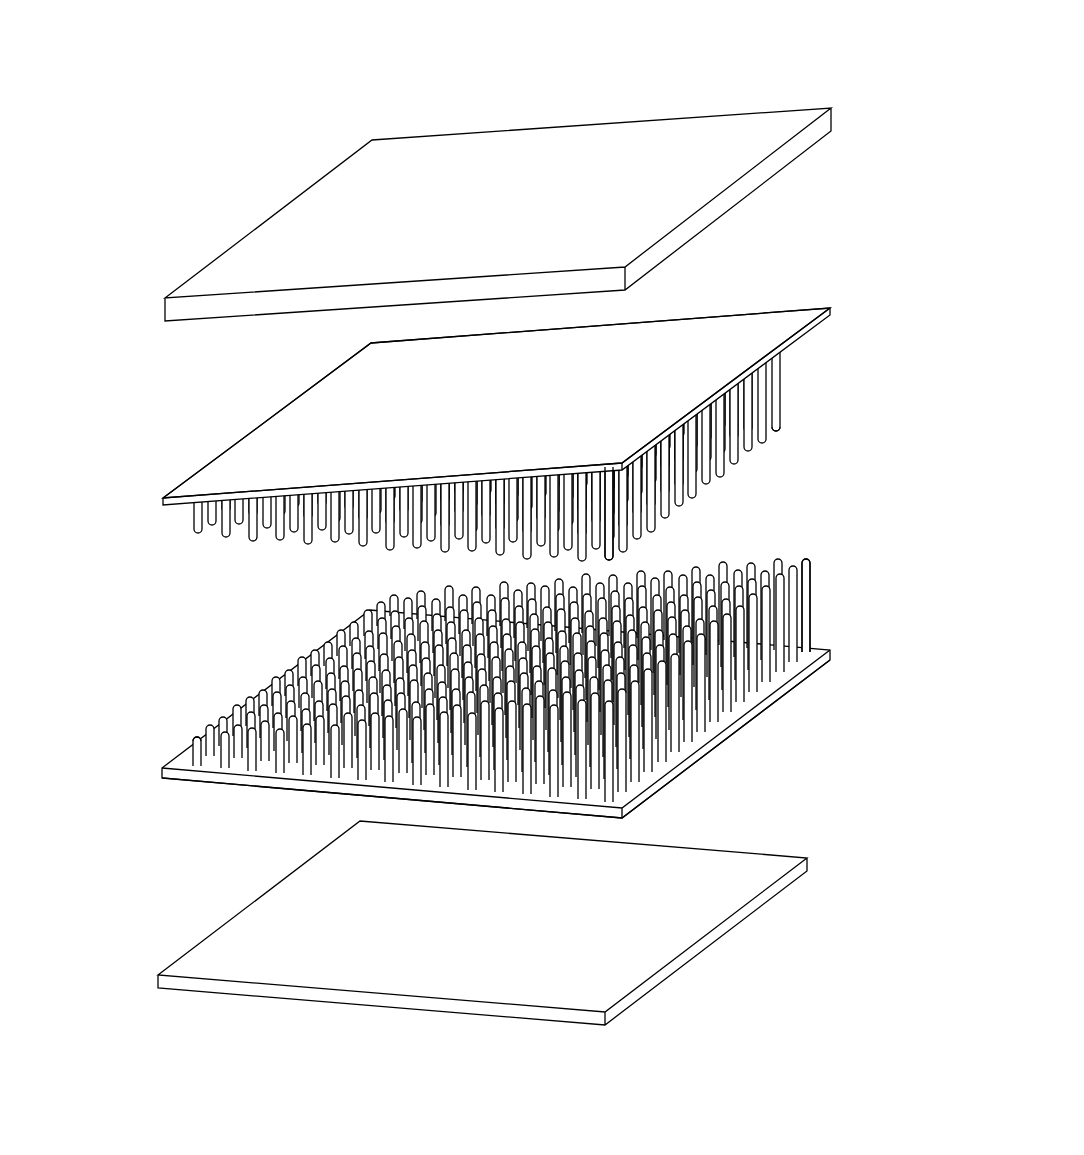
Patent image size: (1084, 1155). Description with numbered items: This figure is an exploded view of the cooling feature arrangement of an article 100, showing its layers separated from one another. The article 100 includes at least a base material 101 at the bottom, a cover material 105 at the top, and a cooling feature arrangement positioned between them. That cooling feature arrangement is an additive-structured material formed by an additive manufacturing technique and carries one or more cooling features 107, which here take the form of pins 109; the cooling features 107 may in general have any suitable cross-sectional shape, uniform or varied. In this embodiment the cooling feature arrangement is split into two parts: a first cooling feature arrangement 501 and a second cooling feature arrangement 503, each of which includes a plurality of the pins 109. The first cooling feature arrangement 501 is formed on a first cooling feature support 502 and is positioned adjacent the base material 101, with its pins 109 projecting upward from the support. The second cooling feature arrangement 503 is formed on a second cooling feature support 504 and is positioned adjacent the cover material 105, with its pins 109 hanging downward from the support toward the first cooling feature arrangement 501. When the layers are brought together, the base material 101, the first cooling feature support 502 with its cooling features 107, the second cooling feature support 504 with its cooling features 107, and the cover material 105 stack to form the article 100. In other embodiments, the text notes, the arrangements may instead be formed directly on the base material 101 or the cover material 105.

The article 100 is at (147, 177).
The cover material 105 is at (773, 110).
The second cooling feature support 504 is at (775, 310).
The second cooling feature arrangement 503 is at (848, 357).
The pins 109 is at (762, 440).
The cooling features 107 is at (722, 473).
The first cooling feature arrangement 501 is at (848, 598).
The first cooling feature support 502 is at (750, 720).
The base material 101 is at (700, 957).